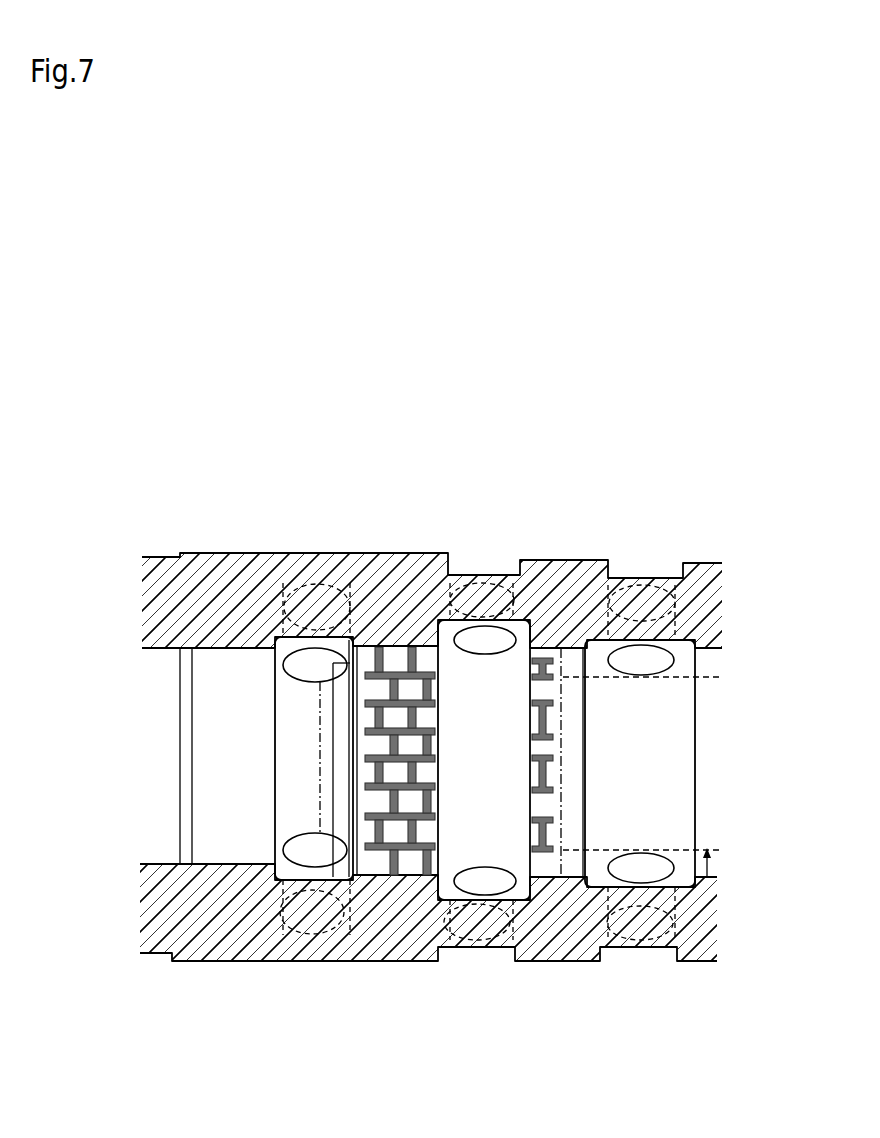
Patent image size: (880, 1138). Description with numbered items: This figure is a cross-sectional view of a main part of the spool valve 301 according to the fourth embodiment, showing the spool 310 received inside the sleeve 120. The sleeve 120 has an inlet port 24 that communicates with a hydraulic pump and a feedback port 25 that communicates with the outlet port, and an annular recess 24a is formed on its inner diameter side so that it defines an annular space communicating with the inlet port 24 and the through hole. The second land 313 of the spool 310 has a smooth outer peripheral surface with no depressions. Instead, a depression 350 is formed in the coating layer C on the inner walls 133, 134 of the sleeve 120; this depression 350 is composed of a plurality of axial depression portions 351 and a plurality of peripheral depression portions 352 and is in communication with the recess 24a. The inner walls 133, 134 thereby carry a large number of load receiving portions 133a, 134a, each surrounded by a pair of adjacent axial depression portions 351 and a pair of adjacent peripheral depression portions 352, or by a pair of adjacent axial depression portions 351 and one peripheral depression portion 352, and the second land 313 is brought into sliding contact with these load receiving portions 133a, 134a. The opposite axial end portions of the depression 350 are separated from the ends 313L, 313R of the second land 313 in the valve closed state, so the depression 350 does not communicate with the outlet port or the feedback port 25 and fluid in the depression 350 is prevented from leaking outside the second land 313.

The feedback port 25 is at (323, 553).
The inlet port 24 is at (494, 618).
The recess 24a is at (420, 642).
The second land 313 is at (568, 645).
The end of second land 313L is at (350, 727).
The end of second land 313R is at (600, 887).
The sleeve 120 is at (636, 550).
The spool valve 301 is at (640, 442).
The inner wall 134 is at (352, 878).
The load receiving portion 134a is at (363, 568).
The inner wall 133 is at (577, 883).
The load receiving portion 133a is at (488, 618).
The depression 350 is at (333, 880).
The axial depression portion 351 is at (413, 852).
The peripheral depression portion 352 is at (535, 830).
The coating layer C is at (563, 737).
The spool 310 is at (712, 900).